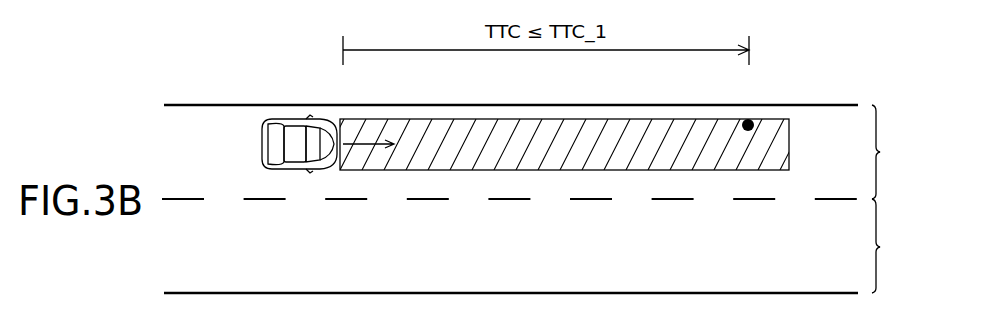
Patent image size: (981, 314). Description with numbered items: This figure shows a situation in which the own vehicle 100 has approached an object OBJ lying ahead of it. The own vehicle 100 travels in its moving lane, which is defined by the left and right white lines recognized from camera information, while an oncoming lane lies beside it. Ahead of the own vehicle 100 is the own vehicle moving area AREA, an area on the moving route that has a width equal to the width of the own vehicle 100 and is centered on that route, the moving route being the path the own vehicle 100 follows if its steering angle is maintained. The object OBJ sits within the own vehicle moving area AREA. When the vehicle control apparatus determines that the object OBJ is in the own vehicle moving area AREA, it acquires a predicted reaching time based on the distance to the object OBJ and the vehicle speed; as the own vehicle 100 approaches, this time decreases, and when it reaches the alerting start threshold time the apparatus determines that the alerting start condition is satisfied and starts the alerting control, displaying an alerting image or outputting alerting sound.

The own vehicle 100 is at (299, 122).
The object OBJ is at (748, 119).
The own vehicle moving area AREA is at (585, 157).